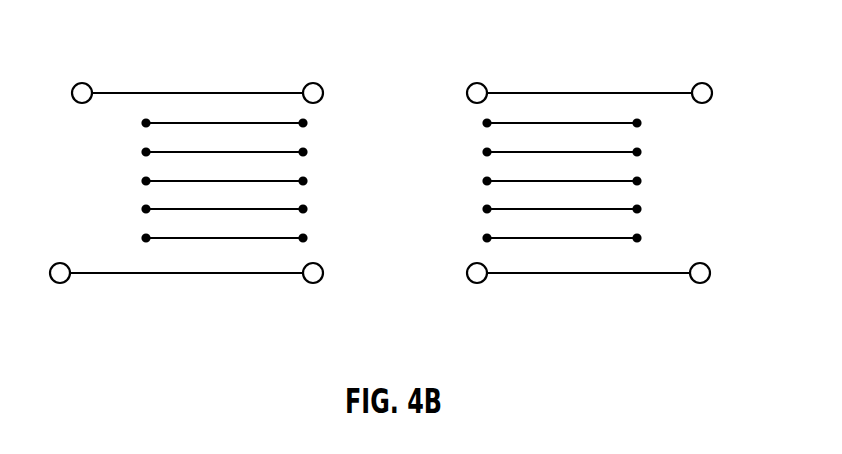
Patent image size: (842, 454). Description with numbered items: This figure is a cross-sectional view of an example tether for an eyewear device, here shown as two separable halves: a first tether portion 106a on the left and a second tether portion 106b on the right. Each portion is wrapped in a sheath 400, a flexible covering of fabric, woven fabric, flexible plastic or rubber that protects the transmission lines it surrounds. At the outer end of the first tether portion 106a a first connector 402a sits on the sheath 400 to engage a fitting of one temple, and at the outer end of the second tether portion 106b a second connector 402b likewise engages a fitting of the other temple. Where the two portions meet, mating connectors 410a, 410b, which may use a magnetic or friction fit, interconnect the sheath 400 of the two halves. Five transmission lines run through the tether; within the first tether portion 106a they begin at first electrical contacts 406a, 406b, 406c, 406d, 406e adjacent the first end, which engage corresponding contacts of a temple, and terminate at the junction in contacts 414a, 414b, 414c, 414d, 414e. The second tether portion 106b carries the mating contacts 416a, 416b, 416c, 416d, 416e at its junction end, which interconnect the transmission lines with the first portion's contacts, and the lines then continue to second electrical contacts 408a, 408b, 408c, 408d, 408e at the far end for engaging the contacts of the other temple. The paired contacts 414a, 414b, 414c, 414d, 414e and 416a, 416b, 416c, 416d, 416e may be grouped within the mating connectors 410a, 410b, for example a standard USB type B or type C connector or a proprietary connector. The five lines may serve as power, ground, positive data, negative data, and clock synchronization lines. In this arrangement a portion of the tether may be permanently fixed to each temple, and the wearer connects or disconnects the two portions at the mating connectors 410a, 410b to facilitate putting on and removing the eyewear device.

The sheath 400 is at (250, 93).
The first tether portion 106a is at (183, 93).
The second tether portion 106b is at (547, 93).
The first connector 402a is at (82, 83).
The second connector 402b is at (701, 83).
The mating connector 410a is at (315, 83).
The mating connector 410b is at (477, 83).
The first electrical contact 406a is at (146, 121).
The first electrical contact 406b is at (146, 152).
The first electrical contact 406c is at (146, 181).
The first electrical contact 406d is at (146, 209).
The first electrical contact 406e is at (146, 238).
The contact 414a is at (303, 123).
The contact 414b is at (303, 152).
The contact 414c is at (303, 181).
The contact 414d is at (303, 209).
The contact 414e is at (303, 238).
The contact 416a is at (487, 123).
The contact 416b is at (487, 152).
The contact 416c is at (487, 181).
The contact 416d is at (487, 209).
The contact 416e is at (487, 238).
The second electrical contact 408a is at (637, 121).
The second electrical contact 408b is at (637, 152).
The second electrical contact 408c is at (637, 181).
The second electrical contact 408d is at (637, 209).
The second electrical contact 408e is at (637, 238).